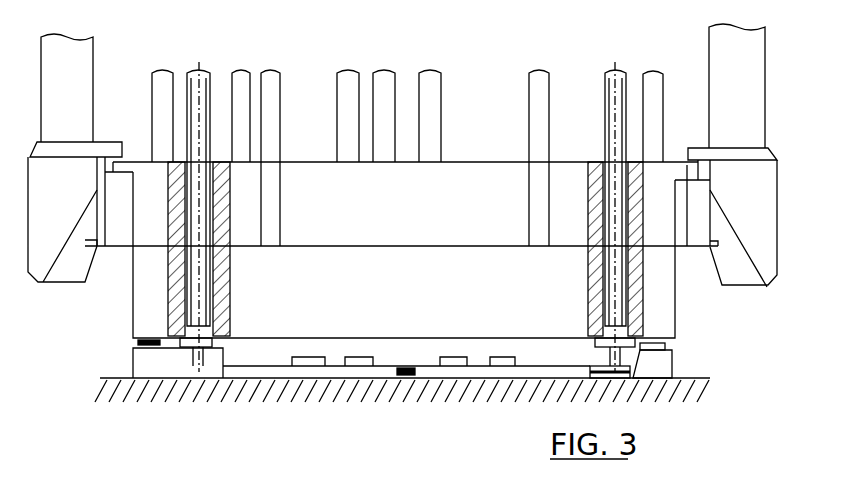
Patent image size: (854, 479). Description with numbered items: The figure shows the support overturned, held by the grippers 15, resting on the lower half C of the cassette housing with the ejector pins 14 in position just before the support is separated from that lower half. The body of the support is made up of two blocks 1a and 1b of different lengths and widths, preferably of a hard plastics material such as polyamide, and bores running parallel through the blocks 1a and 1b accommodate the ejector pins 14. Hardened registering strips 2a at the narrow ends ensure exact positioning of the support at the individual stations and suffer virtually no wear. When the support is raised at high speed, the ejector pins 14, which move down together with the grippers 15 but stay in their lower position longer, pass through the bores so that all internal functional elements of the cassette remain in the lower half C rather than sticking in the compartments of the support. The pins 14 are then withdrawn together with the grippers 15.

The ejector pins 14 is at (275, 67).
The block 1b is at (423, 229).
The block 1a is at (430, 310).
The hardened registering strips 2a is at (120, 222).
The grippers 15 is at (67, 262).
The lower half of the cassette housing c is at (178, 362).